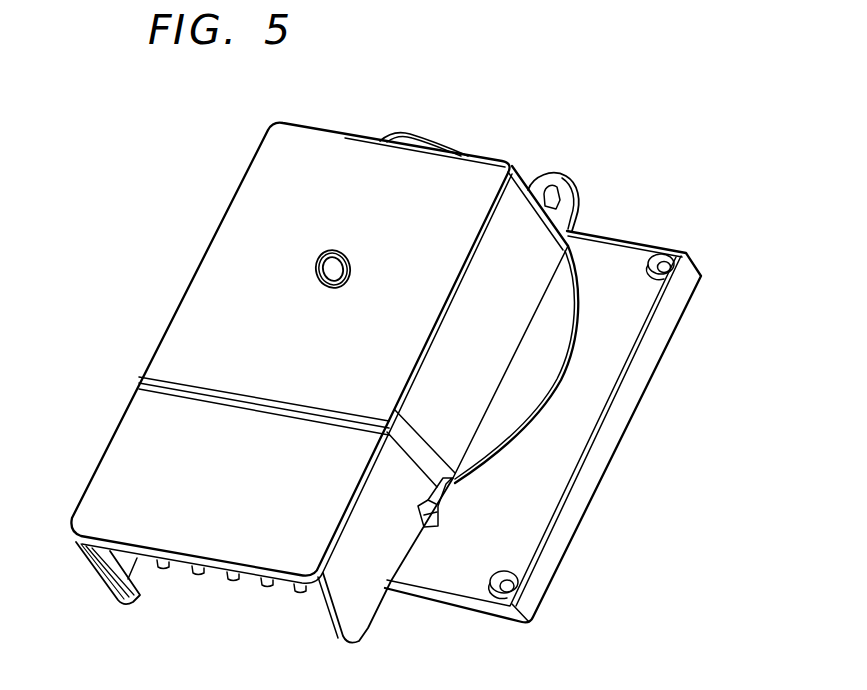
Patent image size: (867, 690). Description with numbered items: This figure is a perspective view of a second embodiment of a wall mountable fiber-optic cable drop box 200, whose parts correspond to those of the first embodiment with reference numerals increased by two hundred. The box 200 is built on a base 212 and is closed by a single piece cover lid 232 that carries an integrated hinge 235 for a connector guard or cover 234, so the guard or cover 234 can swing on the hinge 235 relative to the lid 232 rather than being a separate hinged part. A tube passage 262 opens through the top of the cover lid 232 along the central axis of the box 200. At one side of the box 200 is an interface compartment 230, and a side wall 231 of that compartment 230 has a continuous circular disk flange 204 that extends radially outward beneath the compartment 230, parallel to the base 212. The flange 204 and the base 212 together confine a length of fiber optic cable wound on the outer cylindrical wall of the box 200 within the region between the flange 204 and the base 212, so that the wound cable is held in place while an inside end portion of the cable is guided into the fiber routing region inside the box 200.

The fiber-optic cable drop box 200 is at (687, 168).
The circular disk flange 204 is at (540, 356).
The base 212 is at (516, 521).
The interface compartment 230 is at (527, 190).
The side wall 231 is at (523, 287).
The cover lid 232 is at (268, 177).
The connector guard or cover 234 is at (105, 493).
The integrated hinge 235 is at (139, 383).
The tube passage 262 is at (316, 267).